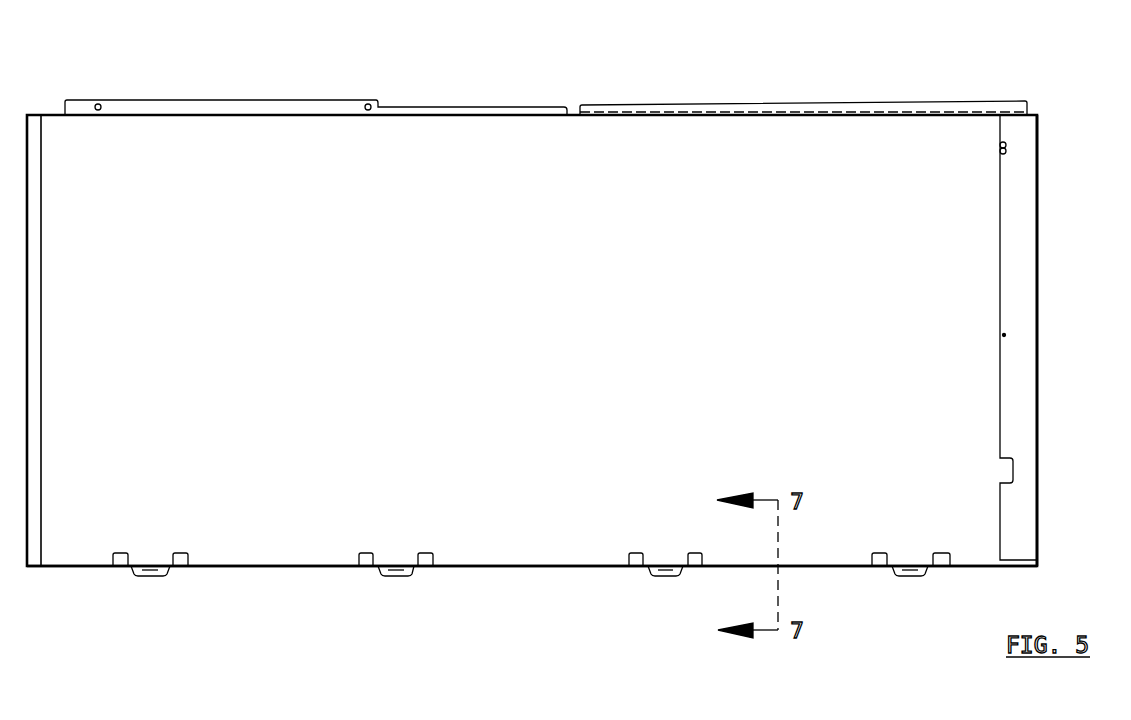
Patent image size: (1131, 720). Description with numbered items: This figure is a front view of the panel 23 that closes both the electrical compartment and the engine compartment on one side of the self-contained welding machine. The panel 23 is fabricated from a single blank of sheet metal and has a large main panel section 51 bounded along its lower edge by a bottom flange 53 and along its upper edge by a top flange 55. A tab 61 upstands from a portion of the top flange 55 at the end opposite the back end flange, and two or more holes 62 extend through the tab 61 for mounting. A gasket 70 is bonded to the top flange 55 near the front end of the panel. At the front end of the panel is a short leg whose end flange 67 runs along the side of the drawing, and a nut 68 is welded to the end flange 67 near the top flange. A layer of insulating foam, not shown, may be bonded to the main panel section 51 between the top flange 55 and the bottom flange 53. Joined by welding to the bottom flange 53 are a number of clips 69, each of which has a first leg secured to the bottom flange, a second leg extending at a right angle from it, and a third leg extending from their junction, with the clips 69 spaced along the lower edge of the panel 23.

The panel 23 is at (1038, 292).
The main panel section 51 is at (530, 353).
The bottom flange 53 is at (535, 568).
The top flange 55 is at (893, 107).
The tab 61 is at (202, 103).
The holes 62 is at (101, 103).
The end flange 67 is at (1013, 242).
The nut 68 is at (997, 153).
The clips 69 is at (663, 577).
The gasket 70 is at (650, 107).